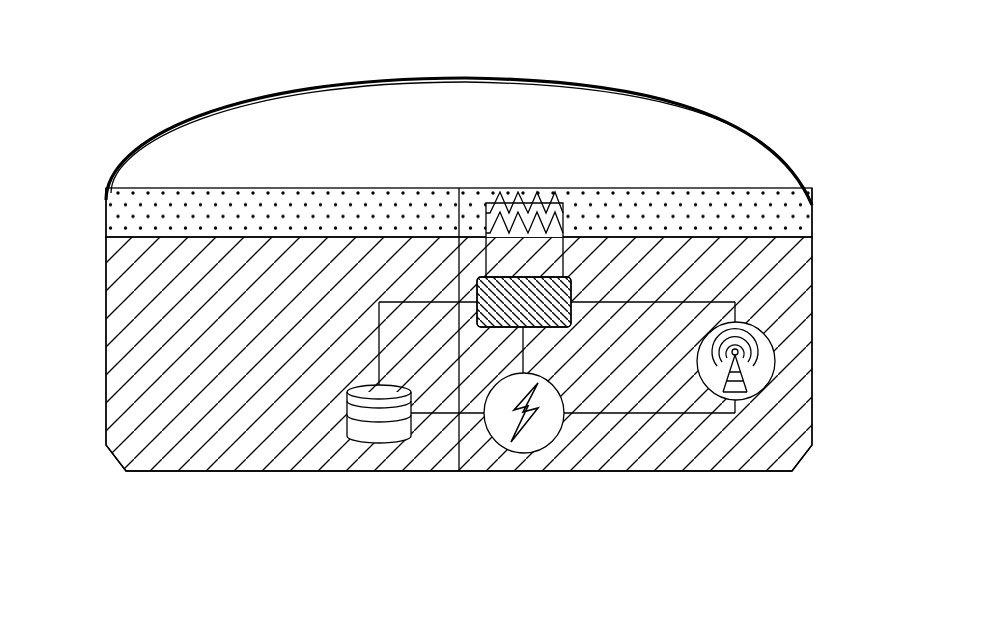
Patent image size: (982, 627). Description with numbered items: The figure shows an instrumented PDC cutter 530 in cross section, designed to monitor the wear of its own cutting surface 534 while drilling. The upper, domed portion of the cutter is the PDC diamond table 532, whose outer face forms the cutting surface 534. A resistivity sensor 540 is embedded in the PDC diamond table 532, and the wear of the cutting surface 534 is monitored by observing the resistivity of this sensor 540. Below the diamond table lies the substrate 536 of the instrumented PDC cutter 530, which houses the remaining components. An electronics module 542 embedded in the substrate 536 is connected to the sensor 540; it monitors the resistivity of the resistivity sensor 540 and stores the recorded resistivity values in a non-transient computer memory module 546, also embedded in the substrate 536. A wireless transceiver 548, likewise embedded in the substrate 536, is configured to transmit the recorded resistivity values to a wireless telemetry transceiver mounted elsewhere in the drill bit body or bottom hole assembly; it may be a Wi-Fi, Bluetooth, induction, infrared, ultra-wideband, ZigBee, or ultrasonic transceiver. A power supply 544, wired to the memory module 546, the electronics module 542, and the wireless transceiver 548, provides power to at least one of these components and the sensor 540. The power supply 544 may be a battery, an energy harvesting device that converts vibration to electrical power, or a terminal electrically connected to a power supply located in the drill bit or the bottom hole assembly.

The instrumented PDC cutter 530 is at (188, 44).
The PDC diamond table 532 is at (117, 218).
The cutting surface 534 is at (242, 155).
The substrate 536 is at (143, 356).
The resistivity sensor 540 is at (504, 190).
The electronics module 542 is at (575, 290).
The power supply 544 is at (537, 455).
The non-transient computer memory module 546 is at (372, 443).
The wireless transceiver 548 is at (775, 377).